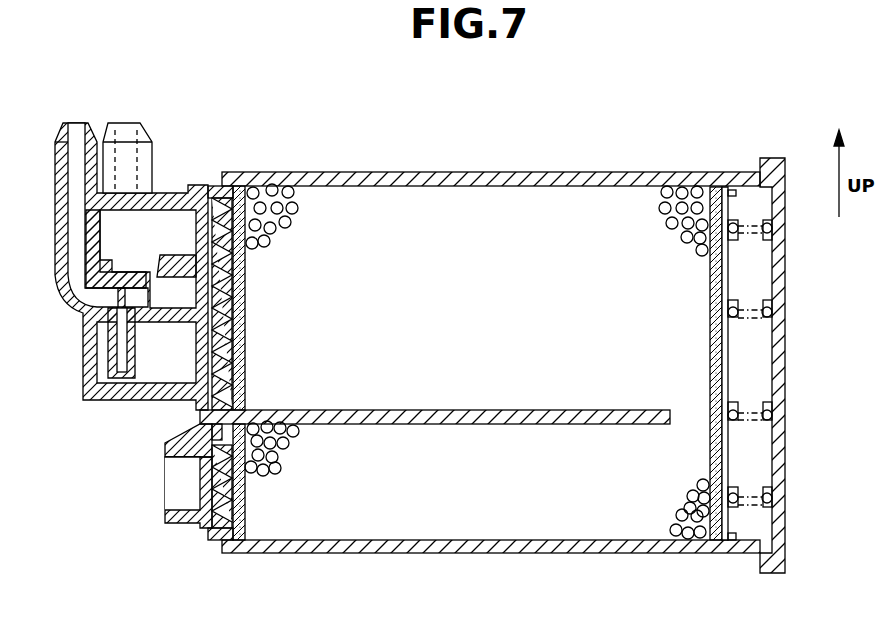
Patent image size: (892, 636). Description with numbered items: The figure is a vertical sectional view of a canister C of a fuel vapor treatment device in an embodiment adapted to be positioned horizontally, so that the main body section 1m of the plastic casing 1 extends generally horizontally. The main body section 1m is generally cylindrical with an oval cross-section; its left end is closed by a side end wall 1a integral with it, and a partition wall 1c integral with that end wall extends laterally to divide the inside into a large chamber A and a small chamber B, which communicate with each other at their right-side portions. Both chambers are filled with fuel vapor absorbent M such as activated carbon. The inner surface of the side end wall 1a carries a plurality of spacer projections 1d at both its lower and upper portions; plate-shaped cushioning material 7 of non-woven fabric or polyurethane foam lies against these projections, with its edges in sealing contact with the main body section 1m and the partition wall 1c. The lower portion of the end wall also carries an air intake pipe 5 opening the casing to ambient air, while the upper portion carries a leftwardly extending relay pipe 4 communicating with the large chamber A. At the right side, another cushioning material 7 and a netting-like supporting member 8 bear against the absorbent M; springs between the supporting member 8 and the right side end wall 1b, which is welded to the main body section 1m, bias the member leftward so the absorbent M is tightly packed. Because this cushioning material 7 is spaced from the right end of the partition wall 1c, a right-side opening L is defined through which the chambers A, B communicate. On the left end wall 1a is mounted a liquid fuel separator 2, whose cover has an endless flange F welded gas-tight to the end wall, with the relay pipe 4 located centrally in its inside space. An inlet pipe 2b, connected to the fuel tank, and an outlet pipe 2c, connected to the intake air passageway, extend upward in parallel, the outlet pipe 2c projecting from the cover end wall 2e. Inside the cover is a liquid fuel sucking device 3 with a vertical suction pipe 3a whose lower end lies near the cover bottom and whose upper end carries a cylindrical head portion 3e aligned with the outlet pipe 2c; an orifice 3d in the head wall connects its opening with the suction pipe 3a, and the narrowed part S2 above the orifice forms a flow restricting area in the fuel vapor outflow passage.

The casing 1 is at (493, 330).
The side end wall 1a is at (185, 185).
The side end wall 1b is at (782, 287).
The partition wall 1c is at (522, 409).
The spacer projections 1d is at (243, 287).
The main body section 1m is at (552, 172).
The liquid fuel separator 2 is at (107, 284).
The inlet pipe 2b is at (123, 150).
The outlet pipe 2c is at (55, 173).
The end wall 2e is at (85, 375).
The liquid fuel sucking device 3 is at (92, 254).
The suction pipe 3a is at (110, 352).
The orifice 3d is at (133, 312).
The head portion 3e is at (128, 272).
The relay pipe 4 is at (172, 262).
The air intake pipe 5 is at (175, 493).
The cushioning material 7 is at (247, 342).
The supporting member 8 is at (725, 272).
The large chamber A is at (416, 262).
The small chamber B is at (470, 502).
The canister C is at (375, 165).
The flange F is at (200, 227).
The right-side opening L is at (695, 410).
The fuel vapor absorbent M is at (278, 187).
The narrowed part S2 is at (110, 298).